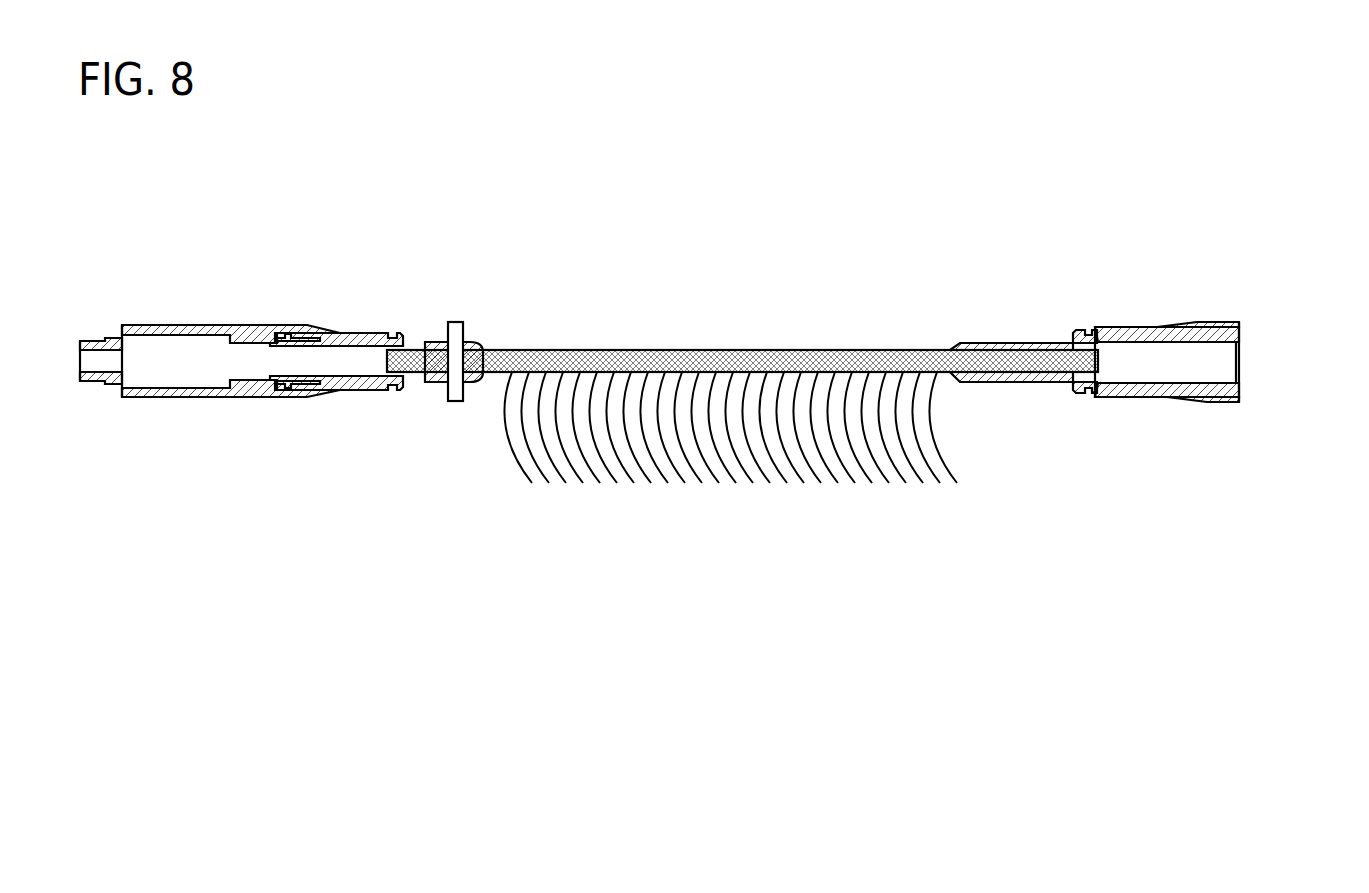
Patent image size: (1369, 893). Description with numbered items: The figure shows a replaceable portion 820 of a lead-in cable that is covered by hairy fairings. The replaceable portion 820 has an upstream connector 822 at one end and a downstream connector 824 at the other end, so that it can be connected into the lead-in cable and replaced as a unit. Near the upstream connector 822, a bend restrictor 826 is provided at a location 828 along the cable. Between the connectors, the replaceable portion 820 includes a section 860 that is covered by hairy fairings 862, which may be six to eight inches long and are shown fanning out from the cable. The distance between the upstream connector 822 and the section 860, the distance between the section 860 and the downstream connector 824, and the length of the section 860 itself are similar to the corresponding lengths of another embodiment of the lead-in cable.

The replaceable portion 820 is at (638, 172).
The upstream connector 822 is at (172, 388).
The downstream connector 824 is at (1230, 390).
The bend restrictor 826 is at (480, 343).
The location 828 is at (458, 402).
The section 860 is at (647, 362).
The hairy fairings 862 is at (685, 477).